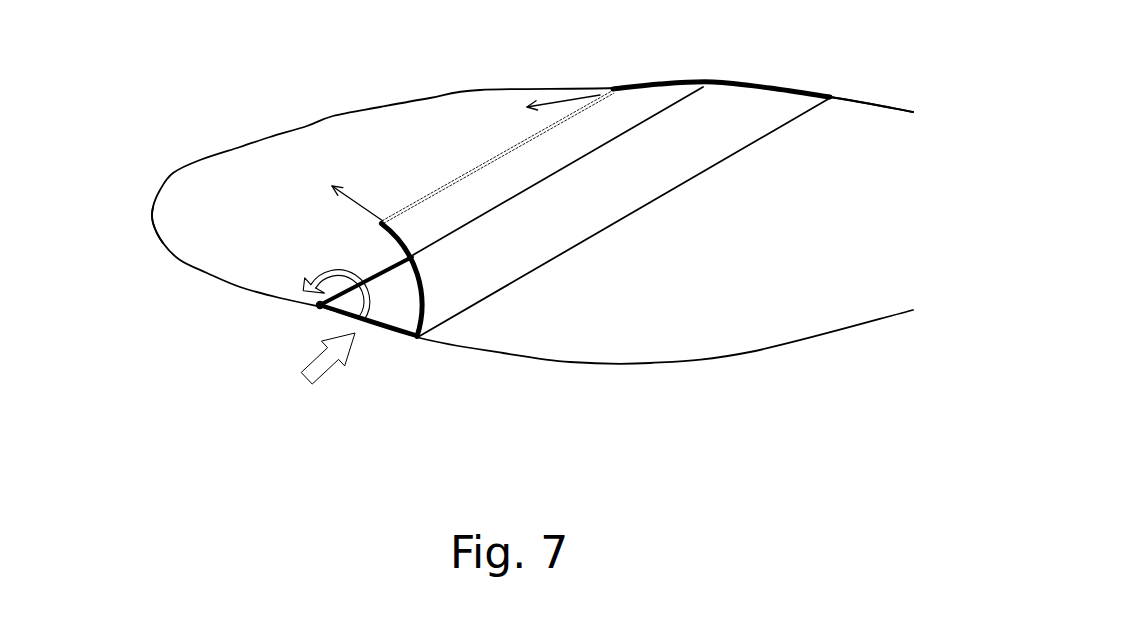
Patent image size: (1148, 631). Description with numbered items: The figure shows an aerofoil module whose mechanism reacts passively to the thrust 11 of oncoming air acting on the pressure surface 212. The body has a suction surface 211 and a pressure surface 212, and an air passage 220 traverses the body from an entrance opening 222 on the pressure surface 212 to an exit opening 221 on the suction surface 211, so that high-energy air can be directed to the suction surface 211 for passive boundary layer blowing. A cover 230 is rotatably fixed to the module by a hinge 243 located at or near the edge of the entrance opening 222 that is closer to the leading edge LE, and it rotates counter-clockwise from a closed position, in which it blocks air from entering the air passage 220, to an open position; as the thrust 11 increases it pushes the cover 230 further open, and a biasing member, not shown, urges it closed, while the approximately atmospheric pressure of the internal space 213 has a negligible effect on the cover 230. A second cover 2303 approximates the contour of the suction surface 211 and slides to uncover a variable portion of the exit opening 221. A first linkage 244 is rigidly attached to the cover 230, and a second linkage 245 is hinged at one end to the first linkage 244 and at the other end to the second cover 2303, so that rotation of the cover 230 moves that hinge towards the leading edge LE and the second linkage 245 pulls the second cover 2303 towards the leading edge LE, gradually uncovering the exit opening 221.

The leading edge LE is at (133, 193).
The suction surface 211 is at (347, 110).
The pressure surface 212 is at (750, 352).
The internal space 213 is at (286, 229).
The air passage 220 is at (590, 229).
The exit opening 221 is at (793, 62).
The second cover 2303 is at (727, 82).
The second linkage 245 is at (488, 158).
The cover 230 is at (388, 330).
The first linkage 244 is at (383, 222).
The entrance opening 222 is at (369, 333).
The hinge 243 is at (322, 312).
The thrust 11 is at (316, 371).